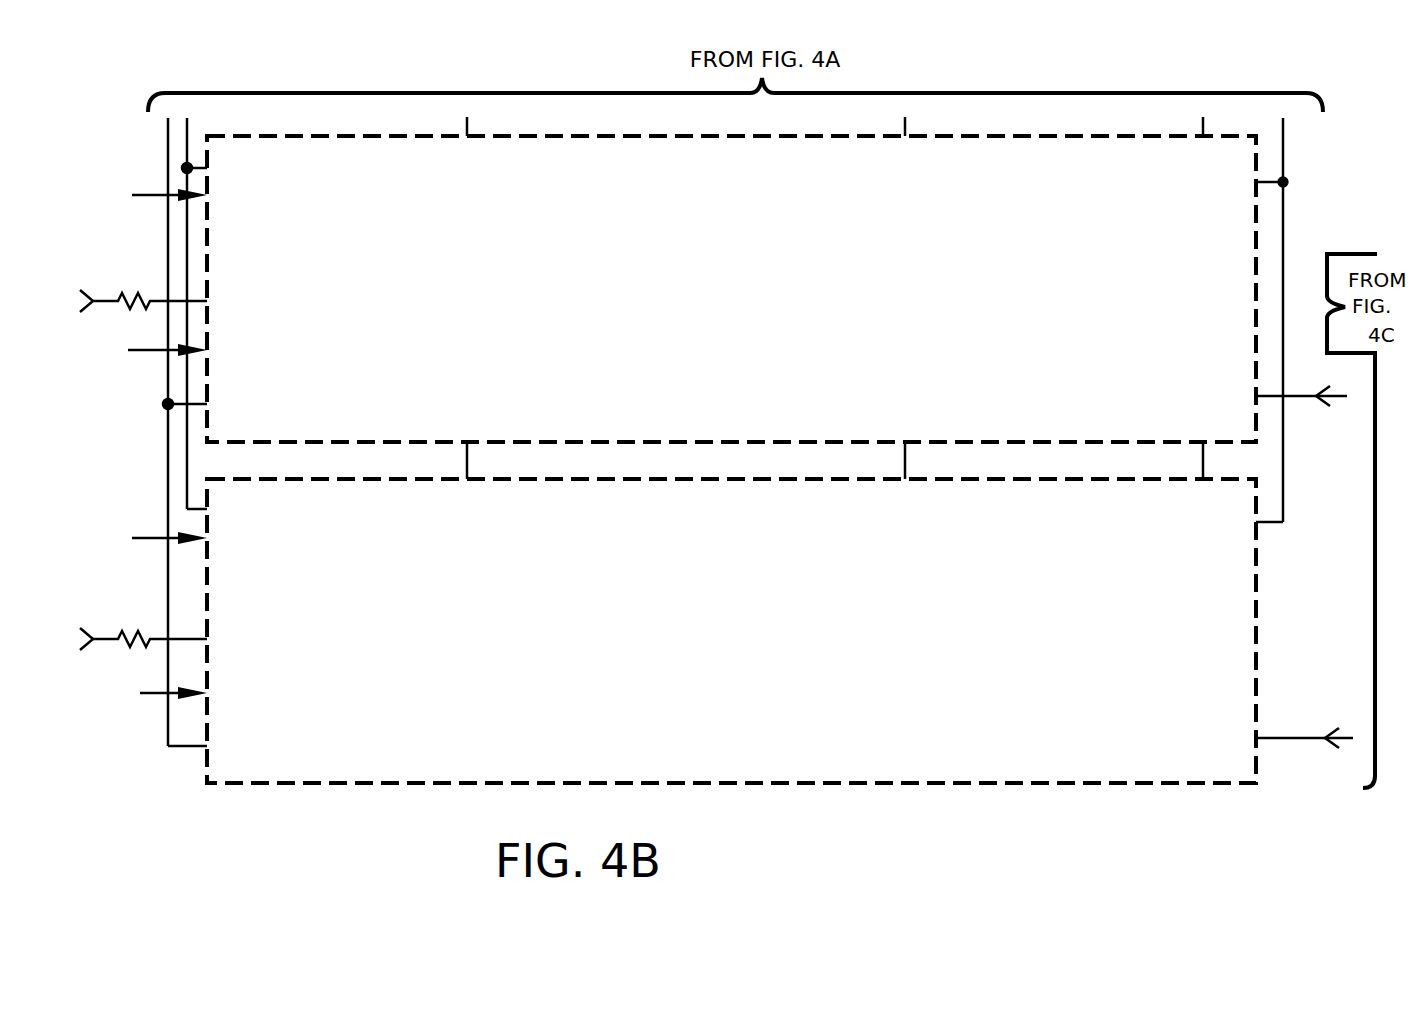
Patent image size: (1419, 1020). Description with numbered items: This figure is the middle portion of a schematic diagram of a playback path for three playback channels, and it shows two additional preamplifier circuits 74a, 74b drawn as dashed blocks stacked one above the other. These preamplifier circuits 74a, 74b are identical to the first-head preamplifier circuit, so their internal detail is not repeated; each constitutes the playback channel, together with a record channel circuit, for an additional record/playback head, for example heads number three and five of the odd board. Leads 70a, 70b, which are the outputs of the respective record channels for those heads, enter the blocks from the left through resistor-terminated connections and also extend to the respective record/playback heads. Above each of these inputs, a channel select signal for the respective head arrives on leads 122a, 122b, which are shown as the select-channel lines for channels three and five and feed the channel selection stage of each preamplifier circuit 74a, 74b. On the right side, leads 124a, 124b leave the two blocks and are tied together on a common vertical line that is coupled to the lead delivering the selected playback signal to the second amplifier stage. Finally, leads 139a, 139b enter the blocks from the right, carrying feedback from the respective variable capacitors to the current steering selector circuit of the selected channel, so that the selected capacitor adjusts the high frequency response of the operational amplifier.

The lead 122a is at (156, 190).
The lead 122b is at (156, 533).
The output lead 70a is at (107, 301).
The output lead 70b is at (107, 639).
The preamplifier circuit 74a is at (142, 349).
The preamplifier circuit 74b is at (148, 692).
The lead 124a is at (1275, 181).
The lead 124b is at (1272, 522).
The lead 139a is at (1276, 394).
The lead 139b is at (1288, 736).